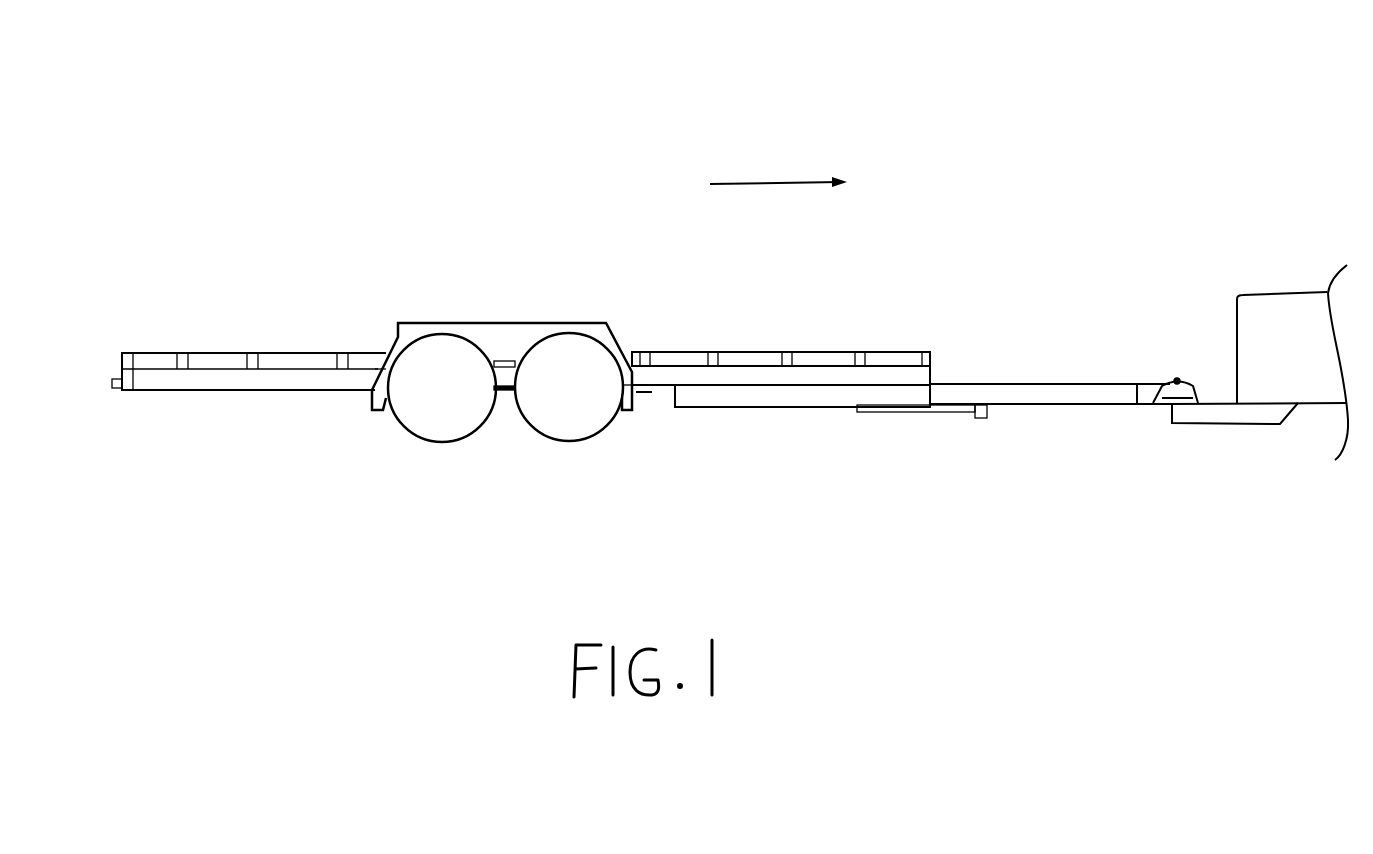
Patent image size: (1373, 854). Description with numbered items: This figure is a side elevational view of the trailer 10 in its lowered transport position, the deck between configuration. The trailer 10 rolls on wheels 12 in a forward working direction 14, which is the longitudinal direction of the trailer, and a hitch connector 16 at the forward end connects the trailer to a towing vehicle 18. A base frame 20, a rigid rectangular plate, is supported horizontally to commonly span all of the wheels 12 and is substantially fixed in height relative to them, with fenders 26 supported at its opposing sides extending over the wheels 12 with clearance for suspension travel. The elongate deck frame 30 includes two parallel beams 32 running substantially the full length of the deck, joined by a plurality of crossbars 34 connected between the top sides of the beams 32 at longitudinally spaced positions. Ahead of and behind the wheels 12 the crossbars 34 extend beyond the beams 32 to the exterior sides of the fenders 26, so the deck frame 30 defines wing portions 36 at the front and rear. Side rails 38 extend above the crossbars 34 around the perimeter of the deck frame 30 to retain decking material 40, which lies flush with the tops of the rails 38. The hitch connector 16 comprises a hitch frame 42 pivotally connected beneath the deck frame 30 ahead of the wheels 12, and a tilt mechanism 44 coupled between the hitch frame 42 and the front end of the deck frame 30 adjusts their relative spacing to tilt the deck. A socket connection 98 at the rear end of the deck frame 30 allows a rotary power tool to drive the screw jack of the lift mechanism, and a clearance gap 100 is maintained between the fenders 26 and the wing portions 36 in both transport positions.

The trailer 10 is at (588, 122).
The wheels 12 is at (445, 440).
The forward working direction 14 is at (780, 182).
The hitch connector 16 is at (1162, 364).
The towing vehicle 18 is at (1278, 272).
The base frame 20 is at (508, 393).
The fenders 26 is at (500, 323).
The deck frame 30 is at (245, 390).
The beams 32 is at (741, 380).
The crossbars 34 is at (253, 353).
The wing portions 36 is at (360, 258).
The side rails 38 is at (828, 352).
The decking material 40 is at (370, 348).
The hitch frame 42 is at (848, 398).
The tilt mechanism 44 is at (929, 410).
The socket connection 98 is at (117, 386).
The clearance gap 100 is at (630, 362).